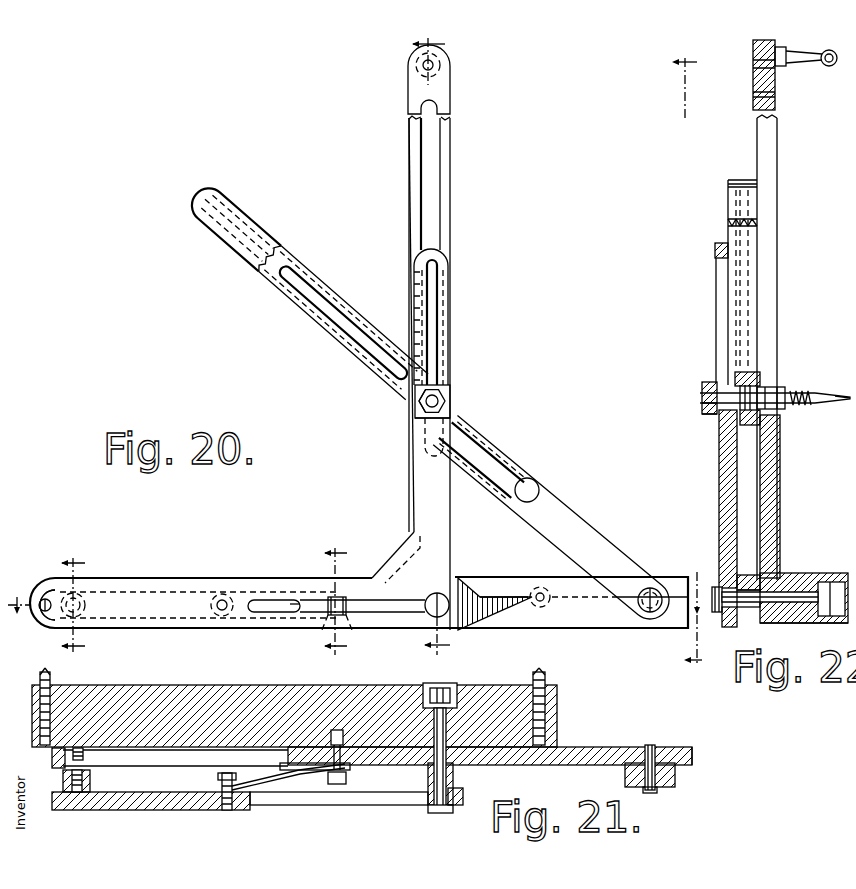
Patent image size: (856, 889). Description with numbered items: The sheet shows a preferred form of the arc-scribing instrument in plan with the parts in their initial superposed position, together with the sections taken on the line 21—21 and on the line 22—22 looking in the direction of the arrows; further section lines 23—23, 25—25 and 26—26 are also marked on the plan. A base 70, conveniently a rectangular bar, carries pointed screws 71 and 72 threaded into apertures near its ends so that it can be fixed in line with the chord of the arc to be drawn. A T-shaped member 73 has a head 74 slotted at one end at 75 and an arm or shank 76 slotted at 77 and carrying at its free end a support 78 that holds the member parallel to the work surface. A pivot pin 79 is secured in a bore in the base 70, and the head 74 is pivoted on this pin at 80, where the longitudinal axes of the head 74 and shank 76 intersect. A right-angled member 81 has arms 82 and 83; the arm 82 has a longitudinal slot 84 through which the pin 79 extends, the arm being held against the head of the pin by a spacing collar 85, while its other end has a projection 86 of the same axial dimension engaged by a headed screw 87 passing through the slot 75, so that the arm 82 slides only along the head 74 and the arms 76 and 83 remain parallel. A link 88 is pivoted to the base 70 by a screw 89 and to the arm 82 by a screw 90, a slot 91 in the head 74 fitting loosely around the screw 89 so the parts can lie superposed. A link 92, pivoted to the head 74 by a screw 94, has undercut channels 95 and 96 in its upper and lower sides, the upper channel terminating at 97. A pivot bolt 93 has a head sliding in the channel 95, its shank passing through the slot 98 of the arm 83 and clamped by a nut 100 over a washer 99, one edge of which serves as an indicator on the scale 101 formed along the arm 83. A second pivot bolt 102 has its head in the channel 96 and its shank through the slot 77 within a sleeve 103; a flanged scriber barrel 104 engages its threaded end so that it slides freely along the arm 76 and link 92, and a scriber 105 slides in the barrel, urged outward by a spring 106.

In FIG. 20, the section line 21 is at (357, 585).
In FIG. 20, the section line 22 is at (442, 345).
In FIG. 22, the section line 23 is at (687, 361).
In FIG. 20, the section line 25 is at (84, 606).
In FIG. 20, the section line 26 is at (346, 601).
In FIG. 20, the base 70 is at (42, 624).
In FIG. 22, the base 70 is at (815, 575).
In FIG. 21, the base 70 is at (190, 685).
In FIG. 20, the pointed screw 71 is at (45, 598).
In FIG. 21, the pointed screw 71 is at (50, 683).
In FIG. 20, the pointed screw 72 is at (551, 603).
In FIG. 21, the pointed screw 72 is at (558, 700).
In FIG. 20, the T-shaped member 73 is at (464, 581).
In FIG. 22, the T-shaped member 73 is at (775, 622).
In FIG. 21, the T-shaped member 73 is at (692, 750).
In FIG. 20, the head 74 is at (604, 620).
In FIG. 21, the head 74 is at (523, 764).
In FIG. 21, the slot 75 is at (157, 758).
In FIG. 20, the arm or shank 76 is at (441, 88).
In FIG. 22, the arm or shank 76 is at (753, 82).
In FIG. 20, the slot 77 is at (445, 199).
In FIG. 22, the slot 77 is at (766, 145).
In FIG. 20, the support 78 is at (421, 65).
In FIG. 22, the support 78 is at (807, 62).
In FIG. 20, the pivot pin 79 is at (440, 594).
In FIG. 22, the pivot pin 79 is at (717, 587).
In FIG. 21, the pivot pin 79 is at (430, 811).
In FIG. 22, the pivot 80 is at (775, 580).
In FIG. 21, the pivot 80 is at (458, 752).
In FIG. 20, the right-angled member 81 is at (408, 556).
In FIG. 22, the right-angled member 81 is at (724, 618).
In FIG. 21, the right-angled member 81 is at (460, 792).
In FIG. 20, the arm 82 is at (183, 575).
In FIG. 21, the arm 82 is at (100, 810).
In FIG. 20, the arm 83 is at (450, 330).
In FIG. 22, the arm 83 is at (715, 250).
In FIG. 20, the longitudinal slot 84 is at (273, 600).
In FIG. 22, the longitudinal slot 84 is at (740, 575).
In FIG. 21, the longitudinal slot 84 is at (331, 805).
In FIG. 20, the spacing collar 85 is at (362, 606).
In FIG. 22, the spacing collar 85 is at (750, 607).
In FIG. 21, the spacing collar 85 is at (428, 776).
In FIG. 20, the projection 86 is at (86, 600).
In FIG. 21, the projection 86 is at (90, 780).
In FIG. 20, the headed screw 87 is at (85, 610).
In FIG. 21, the headed screw 87 is at (86, 750).
In FIG. 20, the link 88 is at (293, 612).
In FIG. 21, the link 88 is at (276, 785).
In FIG. 20, the screw 89 is at (346, 600).
In FIG. 21, the screw 89 is at (346, 778).
In FIG. 20, the screw 90 is at (212, 608).
In FIG. 21, the screw 90 is at (225, 811).
In FIG. 20, the slot 91 is at (322, 627).
In FIG. 21, the slot 91 is at (350, 763).
In FIG. 20, the link 92 is at (585, 527).
In FIG. 22, the link 92 is at (733, 202).
In FIG. 21, the link 92 is at (676, 778).
In FIG. 20, the pivot bolt 93 is at (450, 397).
In FIG. 22, the pivot bolt 93 is at (700, 398).
In FIG. 20, the screw 94 is at (652, 588).
In FIG. 21, the screw 94 is at (662, 792).
In FIG. 20, the channel 95 is at (363, 341).
In FIG. 22, the channel 95 is at (740, 426).
In FIG. 20, the channel 96 is at (265, 213).
In FIG. 22, the channel 96 is at (753, 428).
In FIG. 20, the hole 97 is at (541, 489).
In FIG. 20, the slot 98 is at (443, 291).
In FIG. 22, the slot 98 is at (722, 320).
In FIG. 20, the washer 99 is at (418, 415).
In FIG. 22, the washer 99 is at (712, 414).
In FIG. 20, the nut 100 is at (415, 403).
In FIG. 22, the nut 100 is at (707, 390).
In FIG. 20, the scale 101 is at (413, 300).
In FIG. 22, the pivot bolt 102 is at (770, 390).
In FIG. 22, the sleeve 103 is at (767, 388).
In FIG. 22, the scriber barrel 104 is at (815, 391).
In FIG. 22, the scriber 105 is at (832, 400).
In FIG. 22, the spring 106 is at (780, 410).